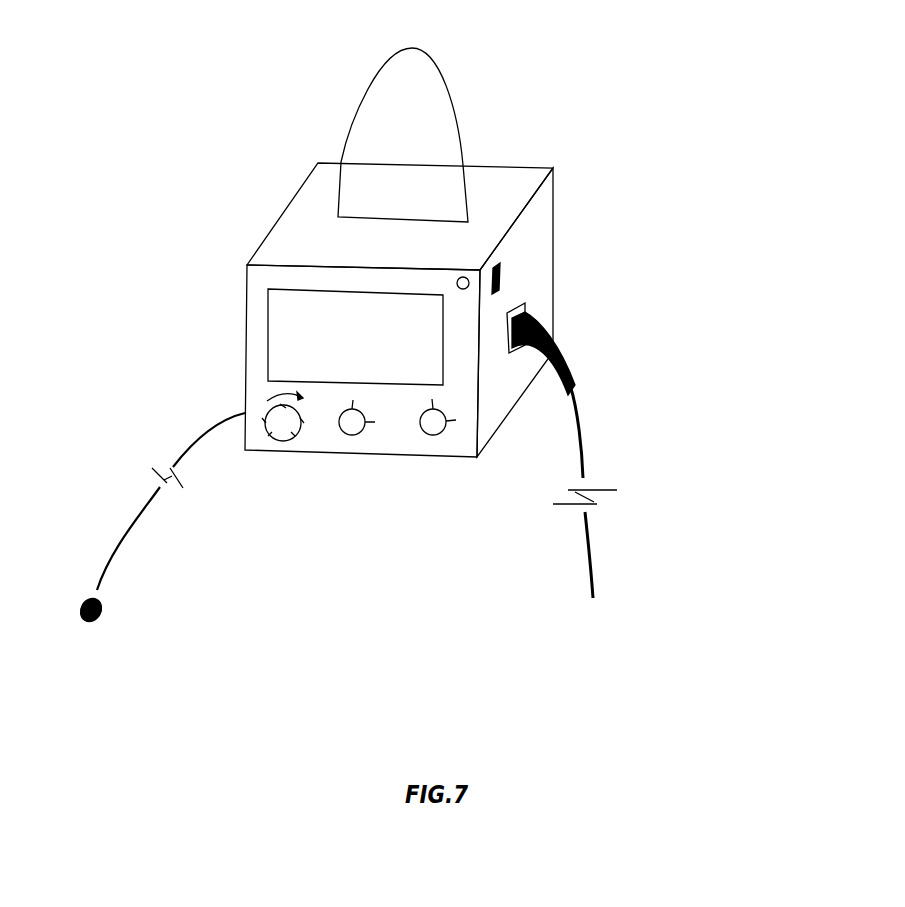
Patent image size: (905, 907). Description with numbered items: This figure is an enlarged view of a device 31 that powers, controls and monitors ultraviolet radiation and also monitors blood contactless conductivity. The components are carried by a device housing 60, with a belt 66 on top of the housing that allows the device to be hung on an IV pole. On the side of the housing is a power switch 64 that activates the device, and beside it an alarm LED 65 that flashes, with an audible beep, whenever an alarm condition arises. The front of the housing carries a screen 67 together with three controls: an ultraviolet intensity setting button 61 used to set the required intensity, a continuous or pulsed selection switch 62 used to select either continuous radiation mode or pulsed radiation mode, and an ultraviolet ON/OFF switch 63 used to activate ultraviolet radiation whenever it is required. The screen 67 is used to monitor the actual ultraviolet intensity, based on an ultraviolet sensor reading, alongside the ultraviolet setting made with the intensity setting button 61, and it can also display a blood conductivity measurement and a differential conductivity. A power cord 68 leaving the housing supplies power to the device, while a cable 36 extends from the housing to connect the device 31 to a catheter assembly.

The device 31 is at (690, 105).
The cable 36 is at (577, 397).
The device housing 60 is at (553, 197).
The ultraviolet intensity setting button 61 is at (267, 453).
The continuous or pulsed selection switch 62 is at (338, 438).
The ultraviolet ON/OFF switch 63 is at (421, 438).
The power switch 64 is at (500, 267).
The alarm LED 65 is at (465, 277).
The belt 66 is at (447, 90).
The screen 67 is at (267, 300).
The power cord 68 is at (210, 421).